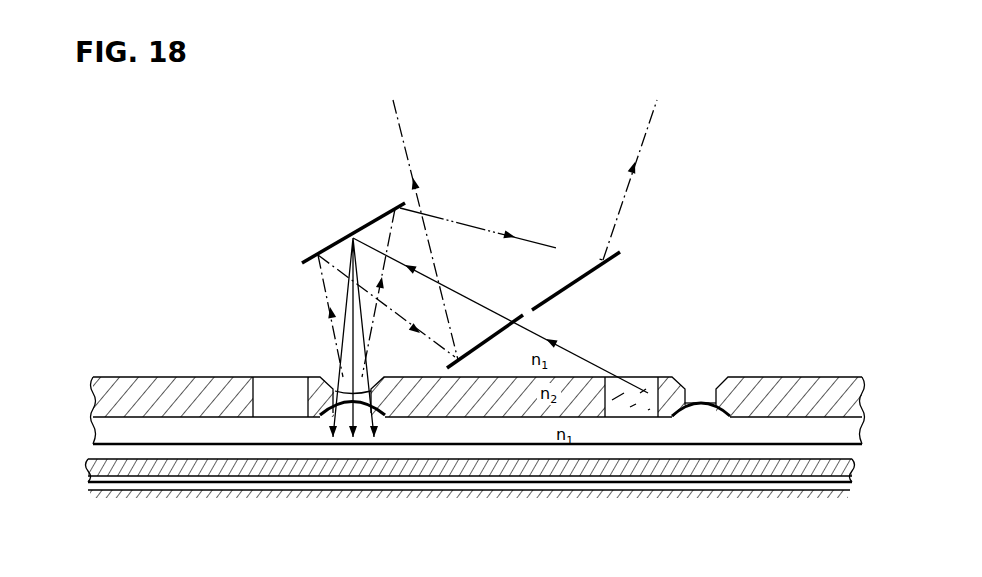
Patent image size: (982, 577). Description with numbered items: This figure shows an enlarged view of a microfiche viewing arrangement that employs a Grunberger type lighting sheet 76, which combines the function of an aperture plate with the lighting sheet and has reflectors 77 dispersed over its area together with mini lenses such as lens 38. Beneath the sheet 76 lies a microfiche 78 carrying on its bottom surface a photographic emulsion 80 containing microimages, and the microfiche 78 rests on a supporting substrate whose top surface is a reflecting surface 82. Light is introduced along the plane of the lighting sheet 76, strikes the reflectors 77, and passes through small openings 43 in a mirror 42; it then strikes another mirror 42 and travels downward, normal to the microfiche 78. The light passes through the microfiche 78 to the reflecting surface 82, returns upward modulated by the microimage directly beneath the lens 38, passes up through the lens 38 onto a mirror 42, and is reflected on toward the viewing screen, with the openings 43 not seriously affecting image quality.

The mirror 42 is at (333, 245).
The openings 43 is at (520, 315).
The lighting sheet 76 is at (181, 388).
The reflectors 77 is at (288, 388).
The mini lens 38 is at (708, 392).
The microfiche 78 is at (512, 468).
The photographic emulsion 80 is at (615, 482).
The reflecting surface 82 is at (330, 490).